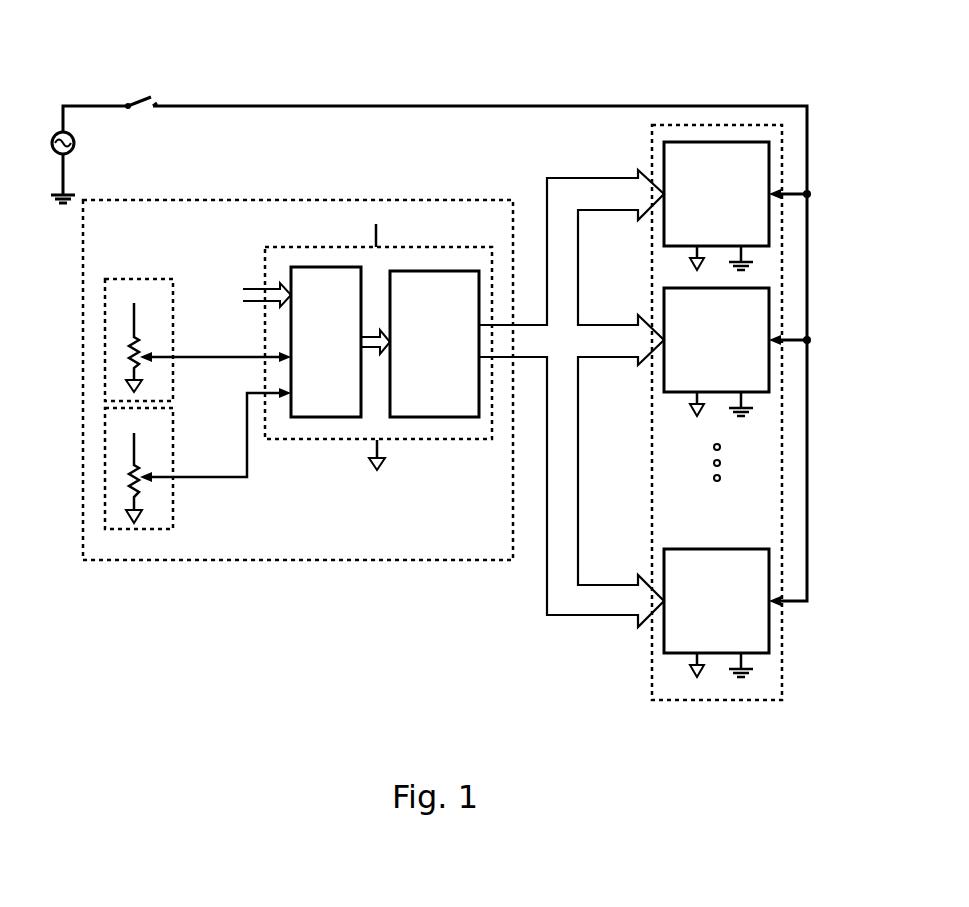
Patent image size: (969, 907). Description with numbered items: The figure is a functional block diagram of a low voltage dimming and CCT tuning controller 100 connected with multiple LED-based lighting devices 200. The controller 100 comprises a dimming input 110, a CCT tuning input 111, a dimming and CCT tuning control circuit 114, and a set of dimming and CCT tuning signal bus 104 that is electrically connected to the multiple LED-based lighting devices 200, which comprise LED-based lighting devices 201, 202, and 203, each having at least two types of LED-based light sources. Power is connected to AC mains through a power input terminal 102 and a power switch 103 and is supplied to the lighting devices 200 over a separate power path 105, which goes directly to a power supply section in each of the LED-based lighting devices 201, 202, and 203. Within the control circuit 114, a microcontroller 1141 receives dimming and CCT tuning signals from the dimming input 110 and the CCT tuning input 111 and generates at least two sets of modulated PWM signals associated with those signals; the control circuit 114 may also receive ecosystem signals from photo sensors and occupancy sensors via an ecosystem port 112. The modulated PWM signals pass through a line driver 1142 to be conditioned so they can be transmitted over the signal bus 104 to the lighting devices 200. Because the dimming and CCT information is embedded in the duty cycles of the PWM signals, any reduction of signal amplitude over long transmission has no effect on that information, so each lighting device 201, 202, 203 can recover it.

The low voltage dimming and CCT tuning controller 100 is at (350, 195).
The power input terminal 102 is at (91, 103).
The power switch 103 is at (140, 98).
The dimming and CCT tuning signal bus 104 is at (527, 357).
The separate power path 105 is at (410, 104).
The dimming input 110 is at (130, 272).
The CCT tuning input 111 is at (180, 531).
The ecosystem port 112 is at (247, 287).
The dimming and CCT tuning control circuit 114 is at (403, 450).
The microcontroller 1141 is at (316, 421).
The line driver 1142 is at (458, 421).
The multiple LED-based lighting devices 200 is at (780, 119).
The LED-based lighting device 201 is at (774, 222).
The LED-based lighting device 202 is at (774, 380).
The LED-based lighting device 203 is at (774, 623).